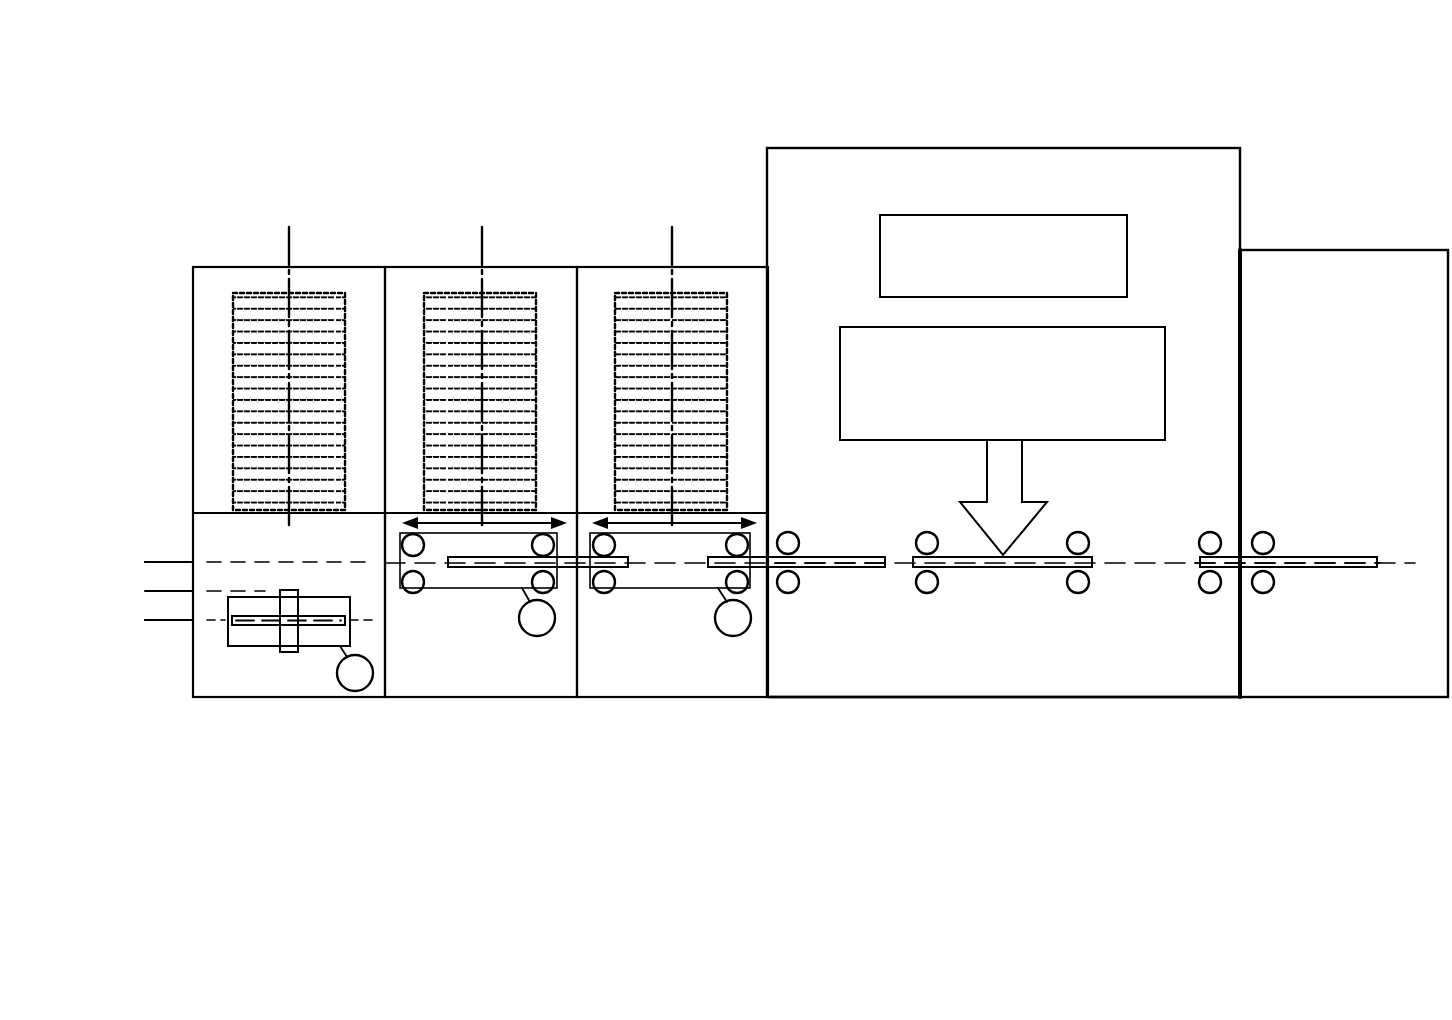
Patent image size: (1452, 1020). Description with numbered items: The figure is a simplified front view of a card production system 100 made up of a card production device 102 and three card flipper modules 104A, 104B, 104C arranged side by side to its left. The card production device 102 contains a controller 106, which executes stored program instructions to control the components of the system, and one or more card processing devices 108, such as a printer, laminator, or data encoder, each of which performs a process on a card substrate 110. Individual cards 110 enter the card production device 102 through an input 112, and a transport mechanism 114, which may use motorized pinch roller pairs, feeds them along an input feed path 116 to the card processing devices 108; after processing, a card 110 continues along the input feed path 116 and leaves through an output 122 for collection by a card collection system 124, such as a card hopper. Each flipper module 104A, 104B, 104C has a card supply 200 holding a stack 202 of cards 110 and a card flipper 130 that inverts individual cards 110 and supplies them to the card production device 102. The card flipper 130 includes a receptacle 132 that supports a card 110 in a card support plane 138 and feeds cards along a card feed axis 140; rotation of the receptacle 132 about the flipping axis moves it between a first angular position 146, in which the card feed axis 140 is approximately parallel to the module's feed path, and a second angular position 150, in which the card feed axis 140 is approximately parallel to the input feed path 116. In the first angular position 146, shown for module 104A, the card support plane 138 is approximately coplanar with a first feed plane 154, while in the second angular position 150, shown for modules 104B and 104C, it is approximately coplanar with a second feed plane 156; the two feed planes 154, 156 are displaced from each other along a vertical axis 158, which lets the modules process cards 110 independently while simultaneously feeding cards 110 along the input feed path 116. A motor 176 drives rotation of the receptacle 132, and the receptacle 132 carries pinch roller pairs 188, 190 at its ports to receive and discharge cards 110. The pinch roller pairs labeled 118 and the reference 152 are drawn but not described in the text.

The card production system 100 is at (268, 128).
The card production device 102 is at (808, 147).
The card flipper module 104A is at (199, 298).
The card flipper module 104B is at (507, 273).
The card flipper module 104C is at (586, 273).
The controller 106 is at (1116, 248).
The card processing device 108 is at (1142, 337).
The card substrate 110 is at (233, 406).
The input 112 is at (780, 521).
The transport mechanism 114 is at (851, 630).
The input feed path 116 is at (1132, 560).
The transport rollers 118 is at (789, 594).
The output 122 is at (1230, 537).
The card collection system 124 is at (1402, 252).
The card flipper 130 is at (262, 600).
The receptacle 132 is at (400, 568).
The card support plane 138 is at (160, 562).
The card feed axis 140 is at (437, 535).
The first angular position 146 is at (237, 664).
The second angular position 150 is at (576, 716).
The card input path 152 is at (160, 591).
The first feed plane 154 is at (175, 620).
The second feed plane 156 is at (178, 562).
The vertical axis 158 is at (289, 242).
The motor 176 is at (355, 691).
The pinch roller pair 188 is at (390, 527).
The pinch roller pair 190 is at (287, 667).
The card supply 200 is at (198, 364).
The stack 202 is at (218, 453).